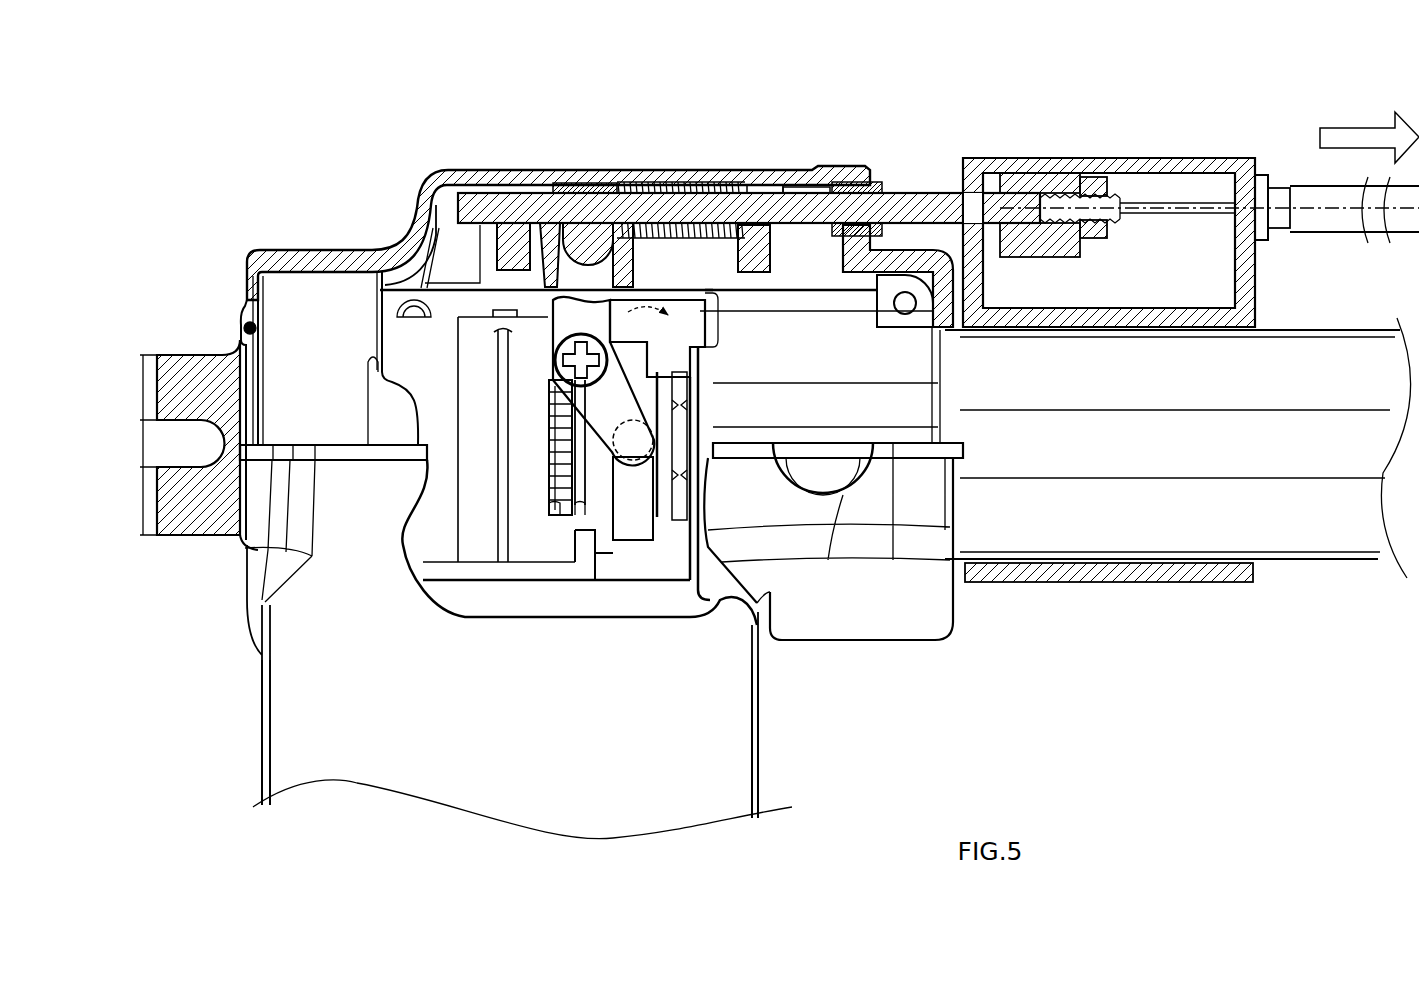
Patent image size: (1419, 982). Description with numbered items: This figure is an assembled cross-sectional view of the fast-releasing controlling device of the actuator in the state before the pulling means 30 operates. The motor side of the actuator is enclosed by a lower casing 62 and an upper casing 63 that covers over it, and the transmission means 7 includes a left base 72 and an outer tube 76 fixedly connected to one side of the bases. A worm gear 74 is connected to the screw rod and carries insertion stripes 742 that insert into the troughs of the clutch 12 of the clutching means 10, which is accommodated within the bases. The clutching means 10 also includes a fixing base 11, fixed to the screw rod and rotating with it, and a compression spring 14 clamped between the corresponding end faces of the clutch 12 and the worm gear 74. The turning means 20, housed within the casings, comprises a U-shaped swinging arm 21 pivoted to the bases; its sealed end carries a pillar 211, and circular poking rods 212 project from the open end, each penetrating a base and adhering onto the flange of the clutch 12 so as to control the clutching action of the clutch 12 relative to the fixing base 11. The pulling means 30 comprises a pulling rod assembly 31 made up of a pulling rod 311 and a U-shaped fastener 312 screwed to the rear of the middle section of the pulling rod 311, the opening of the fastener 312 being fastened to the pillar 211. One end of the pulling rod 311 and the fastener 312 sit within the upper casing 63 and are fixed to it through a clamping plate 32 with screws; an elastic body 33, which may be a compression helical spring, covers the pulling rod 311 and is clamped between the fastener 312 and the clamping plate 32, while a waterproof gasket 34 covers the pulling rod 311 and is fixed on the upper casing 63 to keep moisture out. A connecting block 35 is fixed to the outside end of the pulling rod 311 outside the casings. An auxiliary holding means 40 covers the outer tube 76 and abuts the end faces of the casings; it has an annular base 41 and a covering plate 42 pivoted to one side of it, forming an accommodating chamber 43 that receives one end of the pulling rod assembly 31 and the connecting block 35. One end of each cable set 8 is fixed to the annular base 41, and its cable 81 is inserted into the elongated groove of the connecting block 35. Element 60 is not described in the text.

The transmission means 7 is at (198, 352).
The cable set 8 is at (1332, 226).
The clutching means 10 is at (625, 547).
The fixing base 11 is at (662, 513).
The clutch 12 is at (603, 532).
The compression spring 14 is at (560, 448).
The turning means 20 is at (546, 306).
The swinging arm 21 is at (547, 343).
The poking rod 212 is at (618, 410).
The pillar 211 is at (580, 190).
The pulling means 30 is at (644, 192).
The pulling rod assembly 31 is at (915, 192).
The pulling rod 311 is at (795, 215).
The fastener 312 is at (531, 238).
The clamping plate 32 is at (438, 236).
The elastic body 33 is at (670, 200).
The waterproof gasket 34 is at (869, 183).
The connecting block 35 is at (1055, 175).
The auxiliary holding means 40 is at (1242, 160).
The annular base 41 is at (1120, 583).
The covering plate 42 is at (1098, 175).
The accommodating chamber 43 is at (1200, 235).
The neck tube 60 is at (758, 758).
The lower casing 62 is at (722, 703).
The upper casing 63 is at (326, 270).
The left base 72 is at (292, 308).
The worm gear 74 is at (568, 505).
The insertion stripe 742 is at (560, 428).
The outer tube 76 is at (1313, 540).
The cable 81 is at (1160, 205).